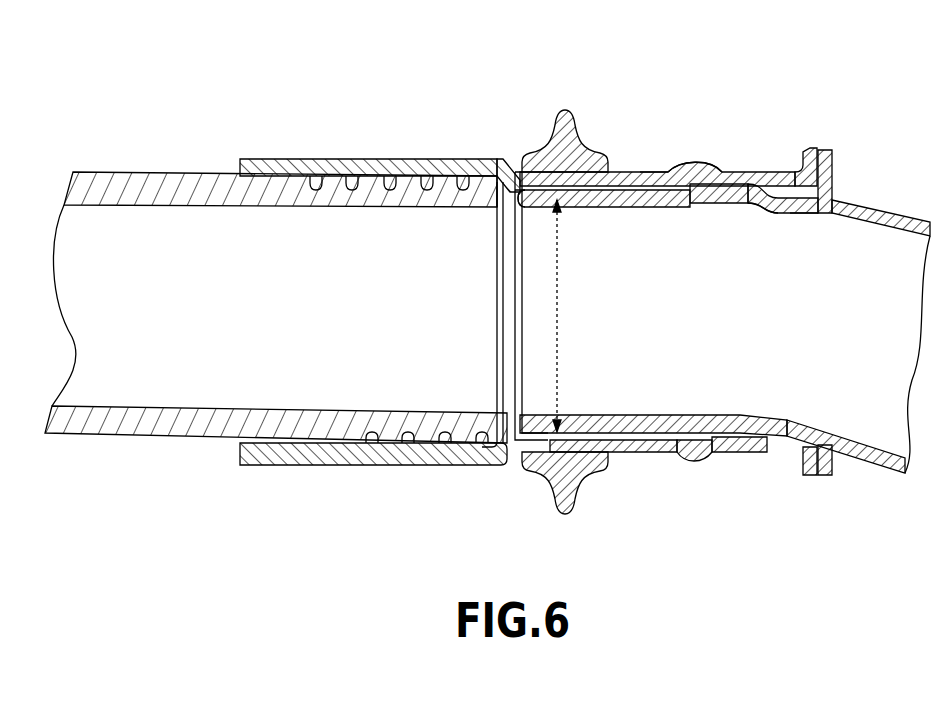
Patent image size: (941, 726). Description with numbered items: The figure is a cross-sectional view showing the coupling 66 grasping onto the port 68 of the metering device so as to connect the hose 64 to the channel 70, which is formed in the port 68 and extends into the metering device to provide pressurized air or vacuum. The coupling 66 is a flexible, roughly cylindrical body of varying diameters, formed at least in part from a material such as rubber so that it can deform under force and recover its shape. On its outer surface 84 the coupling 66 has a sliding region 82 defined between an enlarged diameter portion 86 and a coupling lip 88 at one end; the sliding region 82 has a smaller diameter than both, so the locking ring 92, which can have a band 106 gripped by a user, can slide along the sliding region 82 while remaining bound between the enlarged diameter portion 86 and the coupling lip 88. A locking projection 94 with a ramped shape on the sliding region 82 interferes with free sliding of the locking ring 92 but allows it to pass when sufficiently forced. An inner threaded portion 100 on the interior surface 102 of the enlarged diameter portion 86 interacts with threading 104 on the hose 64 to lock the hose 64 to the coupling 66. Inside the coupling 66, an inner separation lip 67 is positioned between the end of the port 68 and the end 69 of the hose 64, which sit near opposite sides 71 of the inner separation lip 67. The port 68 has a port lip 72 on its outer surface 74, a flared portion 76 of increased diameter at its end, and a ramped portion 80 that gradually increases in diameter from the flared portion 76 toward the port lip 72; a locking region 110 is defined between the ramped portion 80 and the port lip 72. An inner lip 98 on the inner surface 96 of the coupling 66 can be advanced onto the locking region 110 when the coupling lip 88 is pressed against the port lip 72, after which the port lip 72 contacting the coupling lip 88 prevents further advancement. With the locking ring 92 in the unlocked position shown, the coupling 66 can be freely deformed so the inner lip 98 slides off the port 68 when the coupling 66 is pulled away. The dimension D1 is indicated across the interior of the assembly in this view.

The hose 64 is at (150, 176).
The coupling 66 is at (512, 165).
The inner separation lip 67 is at (476, 314).
The port 68 is at (858, 296).
The end of the hose 69 is at (497, 330).
The channel 70 is at (604, 321).
The opposite sides of the inner separation lip 71 is at (497, 208).
The port lip 72 is at (835, 162).
The outer surface of the port 74 is at (855, 200).
The flared portion 76 is at (572, 207).
The ramped portion 80 is at (804, 265).
The sliding region 82 is at (657, 272).
The outer surface of the coupling 84 is at (695, 304).
The enlarged diameter portion 86 is at (361, 265).
The coupling lip 88 is at (805, 150).
The locking ring 92 is at (577, 148).
The locking projection 94 is at (700, 162).
The inner surface of the coupling 96 is at (690, 207).
The inner lip 98 is at (770, 207).
The inner threaded portion 100 is at (360, 170).
The interior surface of the enlarged diameter portion 102 is at (240, 175).
The threading 104 is at (372, 440).
The band 106 is at (565, 267).
The locking region 110 is at (800, 214).
The diameter dimension D1 is at (555, 316).